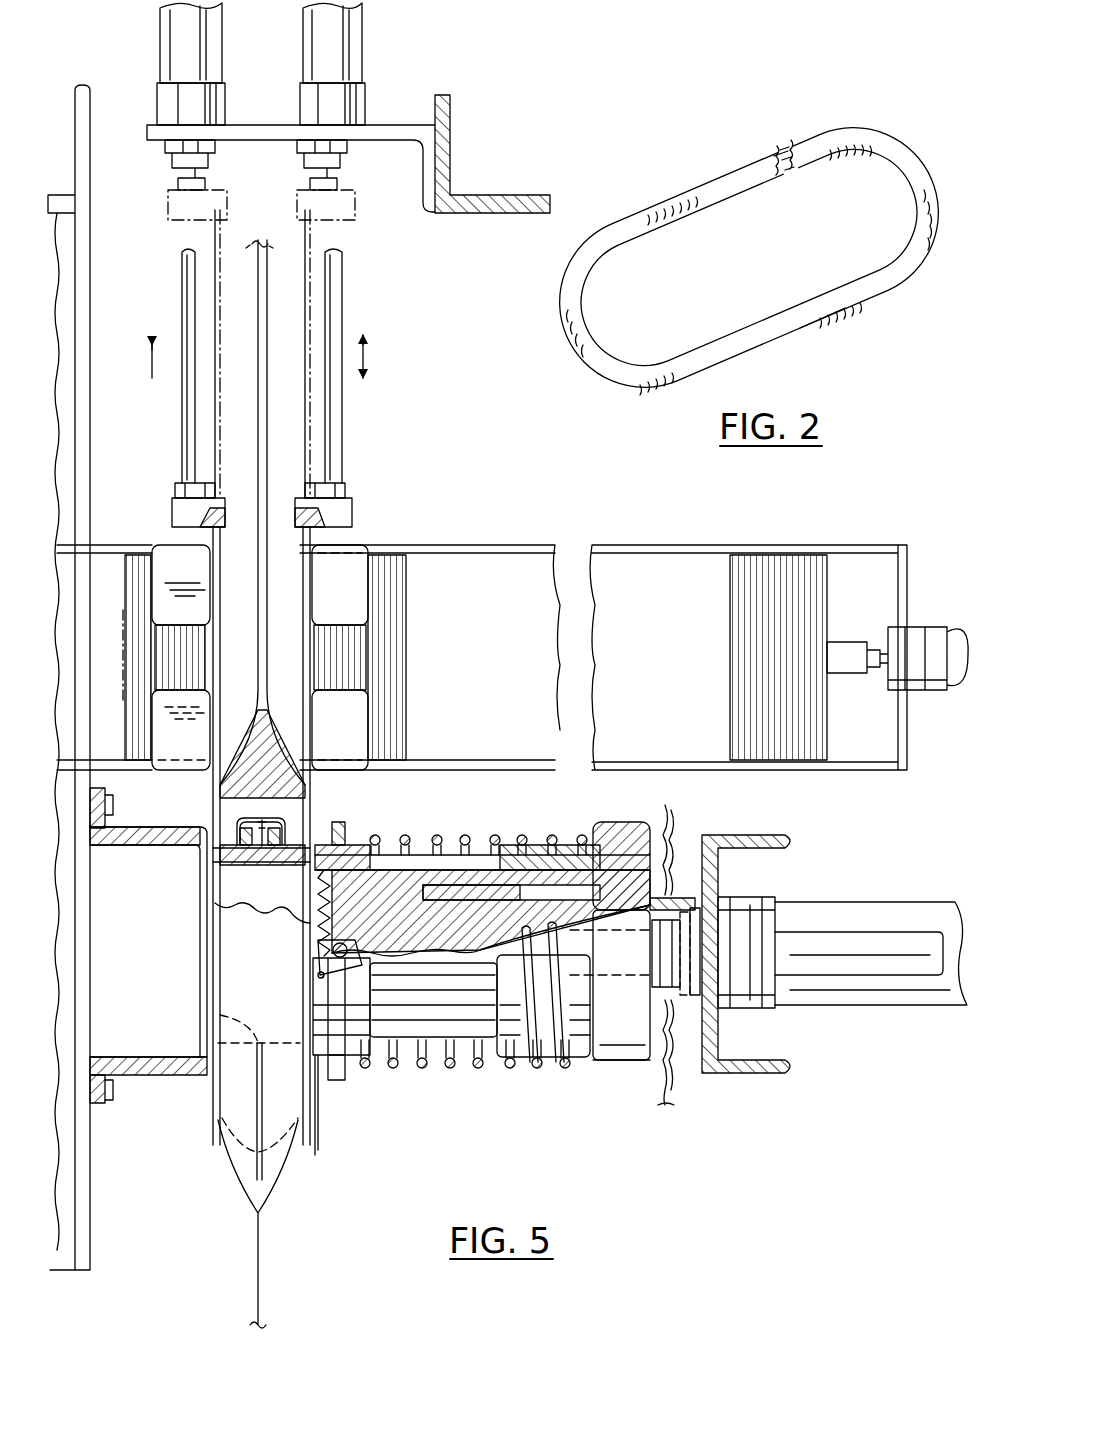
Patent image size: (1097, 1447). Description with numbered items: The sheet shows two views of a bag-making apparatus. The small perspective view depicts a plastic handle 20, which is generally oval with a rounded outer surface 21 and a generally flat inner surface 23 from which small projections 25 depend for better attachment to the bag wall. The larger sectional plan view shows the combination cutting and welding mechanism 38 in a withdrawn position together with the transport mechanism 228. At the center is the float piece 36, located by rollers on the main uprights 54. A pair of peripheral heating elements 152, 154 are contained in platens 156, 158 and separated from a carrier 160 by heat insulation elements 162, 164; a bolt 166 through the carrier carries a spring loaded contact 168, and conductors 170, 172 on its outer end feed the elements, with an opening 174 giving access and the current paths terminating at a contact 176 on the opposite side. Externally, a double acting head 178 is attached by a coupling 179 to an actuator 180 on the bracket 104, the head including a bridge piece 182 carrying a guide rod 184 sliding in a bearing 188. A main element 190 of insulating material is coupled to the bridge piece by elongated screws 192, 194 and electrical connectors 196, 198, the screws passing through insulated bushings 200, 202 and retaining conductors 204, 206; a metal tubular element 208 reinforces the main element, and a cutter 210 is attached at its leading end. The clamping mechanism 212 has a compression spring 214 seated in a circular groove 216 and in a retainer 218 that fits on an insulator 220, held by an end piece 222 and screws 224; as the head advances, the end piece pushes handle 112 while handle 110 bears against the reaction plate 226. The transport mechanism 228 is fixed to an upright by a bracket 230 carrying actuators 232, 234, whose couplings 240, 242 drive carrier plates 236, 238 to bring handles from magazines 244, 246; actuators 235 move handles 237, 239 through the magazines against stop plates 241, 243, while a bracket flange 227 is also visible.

In FIG. 2, the plastic handle 20 is at (680, 196).
In FIG. 2, the rounded outer surface 21 is at (824, 322).
In FIG. 2, the flat inner surface 23 is at (779, 180).
In FIG. 2, the small projections 25 is at (790, 175).
In FIG. 5, the float piece 36 is at (240, 1166).
In FIG. 5, the combination cutting and welding mechanism 38 is at (670, 1120).
In FIG. 5, the main upright 54 is at (490, 197).
In FIG. 5, the bracket 104 is at (762, 1075).
In FIG. 5, the handle 110 is at (212, 1023).
In FIG. 5, the handle 112 is at (292, 1046).
In FIG. 5, the peripheral heating element 152 is at (215, 867).
In FIG. 5, the peripheral heating element 154 is at (320, 845).
In FIG. 5, the platen 156 is at (230, 868).
In FIG. 5, the platen 158 is at (255, 863).
In FIG. 5, the carrier 160 is at (250, 861).
In FIG. 5, the heat insulation element 162 is at (232, 770).
In FIG. 5, the heat insulation element 164 is at (319, 822).
In FIG. 5, the bolt 166 is at (308, 776).
In FIG. 5, the spring loaded contact 168 is at (270, 866).
In FIG. 5, the electrical conductor 170 is at (233, 826).
In FIG. 5, the electrical conductor 172 is at (275, 770).
In FIG. 5, the opening 174 is at (225, 812).
In FIG. 5, the contact 176 is at (212, 1001).
In FIG. 5, the double acting head 178 is at (496, 1084).
In FIG. 5, the coupling 179 is at (686, 1006).
In FIG. 5, the actuator 180 is at (875, 1001).
In FIG. 5, the bridge piece 182 is at (605, 1066).
In FIG. 5, the upper guide rod 184 is at (858, 940).
In FIG. 5, the bearing 188 is at (746, 915).
In FIG. 5, the main element 190 is at (428, 1069).
In FIG. 5, the elongated screw 192 is at (563, 894).
In FIG. 5, the elongated screw 194 is at (690, 1015).
In FIG. 5, the electrical connector 196 is at (484, 843).
In FIG. 5, the electrical connector 198 is at (436, 1066).
In FIG. 5, the insulated bushing 200 is at (667, 922).
In FIG. 5, the insulated bushing 202 is at (668, 1004).
In FIG. 5, the electrical conductor 204 is at (666, 842).
In FIG. 5, the electrical conductor 206 is at (673, 1086).
In FIG. 5, the metal tubular element 208 is at (520, 1066).
In FIG. 5, the cutter 210 is at (350, 960).
In FIG. 5, the clamping mechanism 212 is at (333, 950).
In FIG. 5, the compression spring 214 is at (527, 838).
In FIG. 5, the circular groove 216 is at (590, 845).
In FIG. 5, the retainer 218 is at (337, 1084).
In FIG. 5, the insulator 220 is at (352, 1086).
In FIG. 5, the end piece 222 is at (320, 1116).
In FIG. 5, the screw 224 is at (317, 976).
In FIG. 5, the reaction plate 226 is at (163, 1083).
In FIG. 5, the bracket flange 227 is at (205, 1043).
In FIG. 5, the transport mechanism 228 is at (424, 421).
In FIG. 5, the bracket 230 is at (386, 128).
In FIG. 5, the actuator 232 is at (208, 47).
In FIG. 5, the actuator 234 is at (352, 33).
In FIG. 5, the actuator 235 is at (886, 640).
In FIG. 5, the carrier plate 236 is at (212, 537).
In FIG. 5, the handle 237 is at (178, 650).
In FIG. 5, the carrier plate 238 is at (315, 536).
In FIG. 5, the handle 239 is at (325, 650).
In FIG. 5, the coupling 240 is at (207, 497).
In FIG. 5, the stop plate 241 is at (230, 572).
In FIG. 5, the coupling 242 is at (318, 497).
In FIG. 5, the stop plate 243 is at (296, 578).
In FIG. 5, the magazine 244 is at (103, 541).
In FIG. 5, the magazine 246 is at (466, 541).